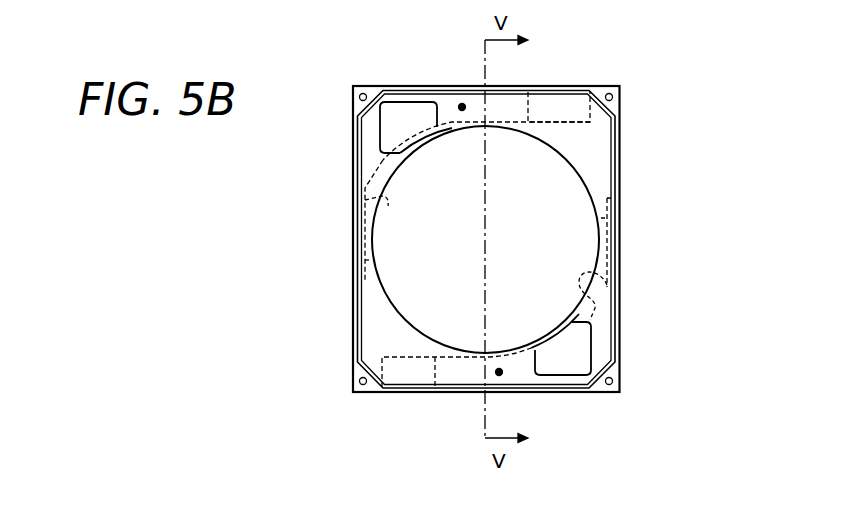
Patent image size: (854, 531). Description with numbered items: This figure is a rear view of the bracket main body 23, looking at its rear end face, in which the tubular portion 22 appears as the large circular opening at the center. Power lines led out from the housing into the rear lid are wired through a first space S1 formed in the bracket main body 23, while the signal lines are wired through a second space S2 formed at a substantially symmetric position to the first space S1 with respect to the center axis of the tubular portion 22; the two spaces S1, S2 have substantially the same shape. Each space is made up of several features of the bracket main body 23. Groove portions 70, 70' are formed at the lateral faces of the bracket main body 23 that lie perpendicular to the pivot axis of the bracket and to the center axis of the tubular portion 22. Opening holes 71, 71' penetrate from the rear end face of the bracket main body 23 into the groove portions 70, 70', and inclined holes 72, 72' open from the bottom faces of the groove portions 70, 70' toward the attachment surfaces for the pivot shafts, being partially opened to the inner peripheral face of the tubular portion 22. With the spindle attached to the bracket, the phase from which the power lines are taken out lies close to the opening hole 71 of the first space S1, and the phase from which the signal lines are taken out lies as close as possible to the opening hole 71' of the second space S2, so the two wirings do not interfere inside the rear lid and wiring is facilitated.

The tubular portion 22 is at (574, 164).
The bracket main body 23 is at (349, 306).
The groove portion 70 is at (456, 406).
The groove portion 70' is at (486, 92).
The opening hole 71 is at (561, 389).
The opening hole 71' is at (363, 129).
The inclined hole 72 is at (637, 259).
The inclined hole 72' is at (331, 220).
The first space S1 is at (499, 378).
The second space S2 is at (462, 107).